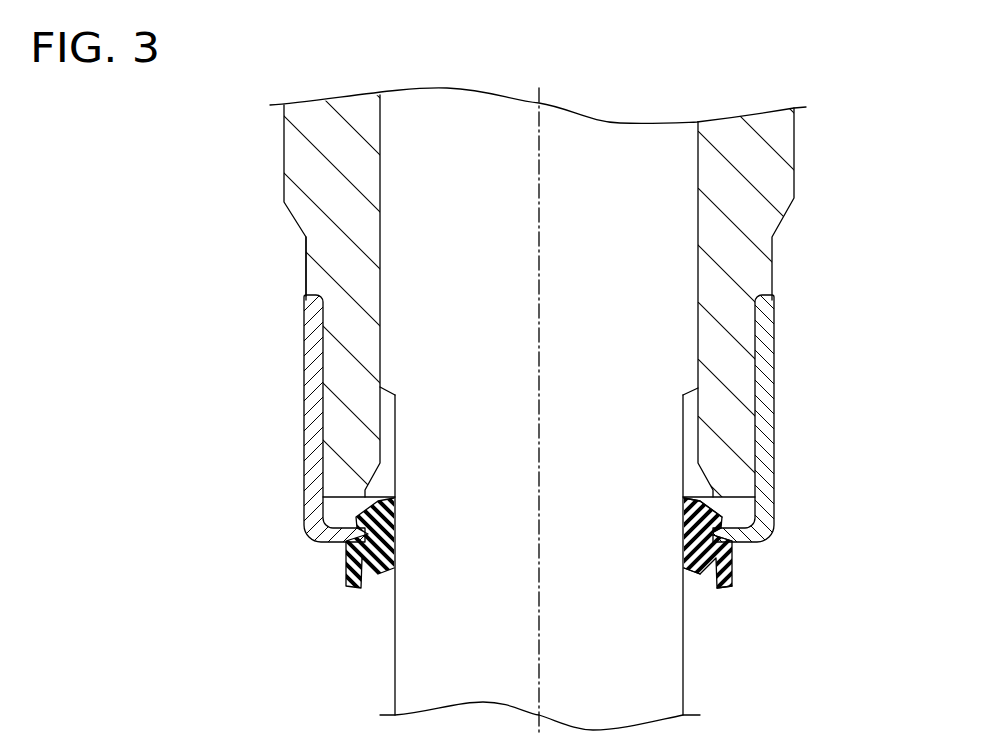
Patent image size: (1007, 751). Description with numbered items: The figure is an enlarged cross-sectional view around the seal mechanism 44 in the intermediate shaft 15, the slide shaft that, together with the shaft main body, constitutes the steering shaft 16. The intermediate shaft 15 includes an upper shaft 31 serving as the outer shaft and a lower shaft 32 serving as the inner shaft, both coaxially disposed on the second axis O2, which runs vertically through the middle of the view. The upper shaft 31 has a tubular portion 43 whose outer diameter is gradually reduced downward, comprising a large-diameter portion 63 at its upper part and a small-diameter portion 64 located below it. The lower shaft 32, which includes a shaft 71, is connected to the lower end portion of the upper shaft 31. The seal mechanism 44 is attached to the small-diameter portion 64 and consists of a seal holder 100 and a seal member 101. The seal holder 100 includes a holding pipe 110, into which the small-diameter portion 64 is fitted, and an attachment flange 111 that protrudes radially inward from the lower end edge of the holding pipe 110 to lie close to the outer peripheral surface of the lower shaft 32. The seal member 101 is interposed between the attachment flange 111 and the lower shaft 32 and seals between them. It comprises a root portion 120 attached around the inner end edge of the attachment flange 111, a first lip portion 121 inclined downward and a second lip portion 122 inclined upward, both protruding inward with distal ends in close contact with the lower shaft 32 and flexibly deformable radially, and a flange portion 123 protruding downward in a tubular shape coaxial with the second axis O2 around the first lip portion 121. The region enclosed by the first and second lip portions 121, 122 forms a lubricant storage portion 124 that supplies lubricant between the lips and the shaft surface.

The intermediate shaft 15 is at (429, 168).
The steering shaft 16 is at (538, 106).
The second axis O2 is at (541, 92).
The upper shaft 31 is at (255, 130).
The lower shaft 32 is at (360, 671).
The tubular portion 43 is at (816, 302).
The seal mechanism 44 is at (298, 427).
The large-diameter portion 63 is at (780, 133).
The small-diameter portion 64 is at (887, 113).
The shaft 71 is at (675, 690).
The seal holder 100 is at (786, 420).
The seal member 101 is at (715, 559).
The holding pipe 110 is at (307, 352).
The attachment flange 111 is at (345, 536).
The root portion 120 is at (738, 540).
The first lip portion 121 is at (683, 568).
The second lip portion 122 is at (683, 500).
The flange portion 123 is at (723, 588).
The lubricant storage portion 124 is at (687, 532).